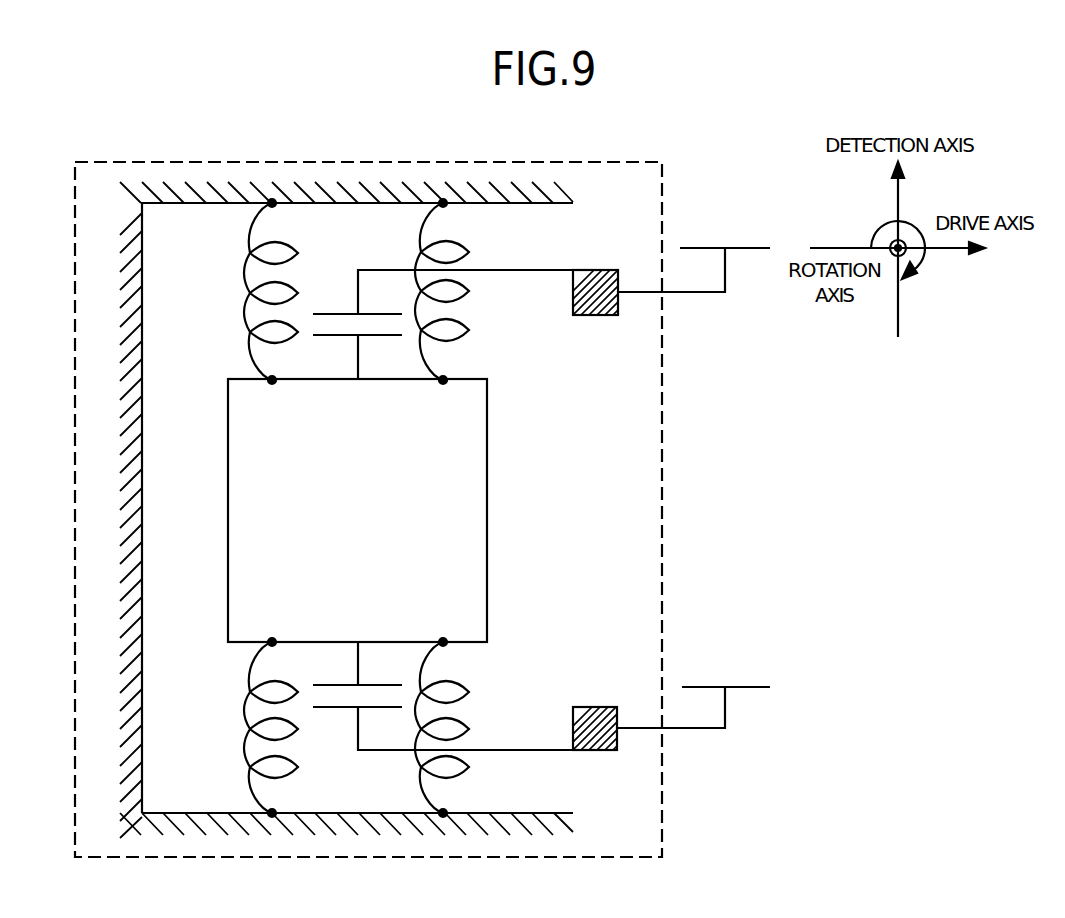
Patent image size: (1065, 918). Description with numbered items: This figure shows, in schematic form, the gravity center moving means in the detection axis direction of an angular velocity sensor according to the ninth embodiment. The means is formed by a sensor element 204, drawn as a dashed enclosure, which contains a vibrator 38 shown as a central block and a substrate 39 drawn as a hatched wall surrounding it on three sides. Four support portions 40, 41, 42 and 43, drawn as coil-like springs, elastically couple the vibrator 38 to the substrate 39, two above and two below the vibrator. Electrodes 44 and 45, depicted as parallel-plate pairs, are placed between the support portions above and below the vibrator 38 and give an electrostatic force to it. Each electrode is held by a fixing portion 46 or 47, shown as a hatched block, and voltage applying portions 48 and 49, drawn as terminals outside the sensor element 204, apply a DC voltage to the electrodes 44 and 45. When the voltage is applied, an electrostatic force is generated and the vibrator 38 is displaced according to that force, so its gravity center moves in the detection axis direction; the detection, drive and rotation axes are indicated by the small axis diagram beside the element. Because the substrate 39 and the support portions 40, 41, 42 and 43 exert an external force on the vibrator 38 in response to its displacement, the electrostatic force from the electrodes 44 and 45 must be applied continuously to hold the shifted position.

The vibrator 38 is at (270, 505).
The substrate 39 is at (545, 813).
The support portion 40 is at (264, 229).
The support portion 41 is at (450, 228).
The support portion 42 is at (273, 712).
The support portion 43 is at (445, 710).
The electrode 44 is at (323, 315).
The electrode 45 is at (333, 708).
The fixing portion 46 is at (596, 315).
The fixing portion 47 is at (593, 708).
The voltage applying portion 48 is at (755, 250).
The voltage applying portion 49 is at (755, 690).
The sensor element 204 is at (662, 506).